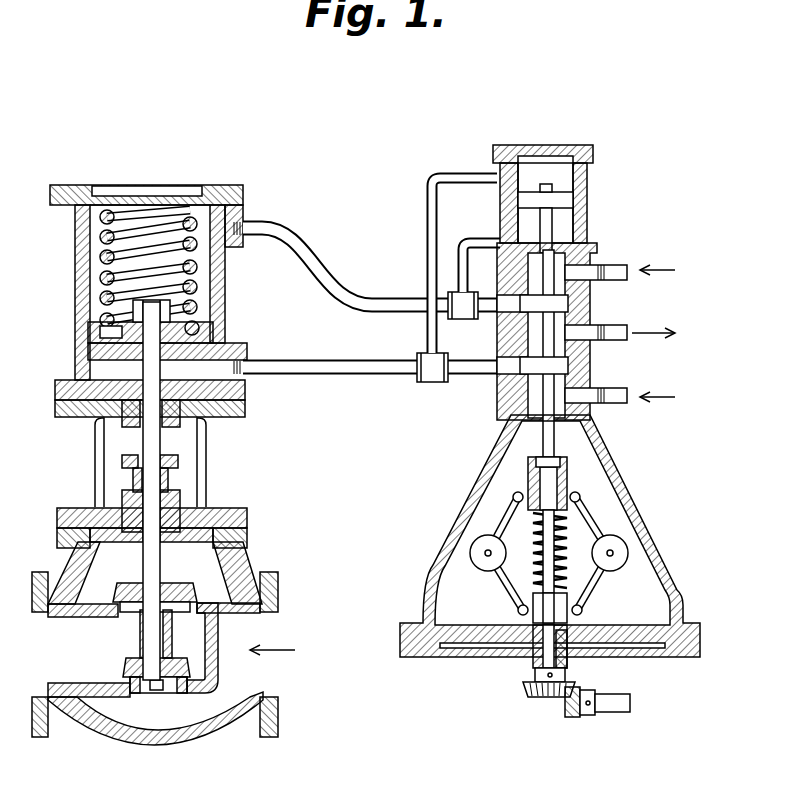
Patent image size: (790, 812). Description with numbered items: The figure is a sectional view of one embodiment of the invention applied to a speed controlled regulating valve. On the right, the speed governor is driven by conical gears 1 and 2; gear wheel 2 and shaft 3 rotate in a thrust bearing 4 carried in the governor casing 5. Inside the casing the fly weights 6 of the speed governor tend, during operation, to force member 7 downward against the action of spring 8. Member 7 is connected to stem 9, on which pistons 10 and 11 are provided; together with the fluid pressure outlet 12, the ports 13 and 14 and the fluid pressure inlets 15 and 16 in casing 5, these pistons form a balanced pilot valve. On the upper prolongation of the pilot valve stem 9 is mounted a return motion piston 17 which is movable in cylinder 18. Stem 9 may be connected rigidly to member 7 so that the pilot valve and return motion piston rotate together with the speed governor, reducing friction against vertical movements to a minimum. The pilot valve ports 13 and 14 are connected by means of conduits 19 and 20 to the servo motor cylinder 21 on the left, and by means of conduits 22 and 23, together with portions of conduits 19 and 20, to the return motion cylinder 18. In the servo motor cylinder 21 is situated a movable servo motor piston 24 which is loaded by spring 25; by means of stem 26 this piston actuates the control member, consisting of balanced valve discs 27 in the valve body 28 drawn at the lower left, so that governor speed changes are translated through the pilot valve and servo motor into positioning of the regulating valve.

The conical gear 1 is at (530, 690).
The gear wheel 2 is at (570, 717).
The shaft 3 is at (545, 652).
The thrust bearing 4 is at (562, 657).
The governor casing 5 is at (668, 548).
The fly weights 6 is at (488, 560).
The member 7 is at (560, 500).
The spring 8 is at (566, 545).
The stem 9 is at (548, 437).
The piston 10 is at (562, 366).
The piston 11 is at (562, 303).
The fluid pressure outlet 12 is at (620, 333).
The port 13 is at (510, 312).
The port 14 is at (520, 380).
The fluid pressure inlet 15 is at (612, 270).
The fluid pressure inlet 16 is at (612, 400).
The return motion piston 17 is at (555, 200).
The cylinder 18 is at (594, 170).
The conduit 19 is at (470, 376).
The conduit 20 is at (330, 272).
The servo motor cylinder 21 is at (75, 297).
The conduit 22 is at (466, 240).
The conduit 23 is at (470, 174).
The servo motor piston 24 is at (92, 345).
The spring 25 is at (104, 262).
The stem 26 is at (150, 440).
The balanced valve discs 27 is at (133, 588).
The valve body 28 is at (150, 745).